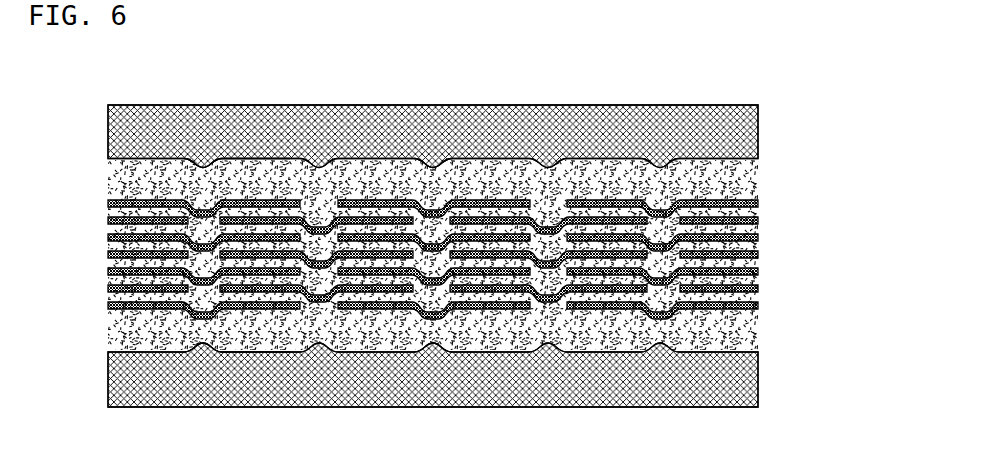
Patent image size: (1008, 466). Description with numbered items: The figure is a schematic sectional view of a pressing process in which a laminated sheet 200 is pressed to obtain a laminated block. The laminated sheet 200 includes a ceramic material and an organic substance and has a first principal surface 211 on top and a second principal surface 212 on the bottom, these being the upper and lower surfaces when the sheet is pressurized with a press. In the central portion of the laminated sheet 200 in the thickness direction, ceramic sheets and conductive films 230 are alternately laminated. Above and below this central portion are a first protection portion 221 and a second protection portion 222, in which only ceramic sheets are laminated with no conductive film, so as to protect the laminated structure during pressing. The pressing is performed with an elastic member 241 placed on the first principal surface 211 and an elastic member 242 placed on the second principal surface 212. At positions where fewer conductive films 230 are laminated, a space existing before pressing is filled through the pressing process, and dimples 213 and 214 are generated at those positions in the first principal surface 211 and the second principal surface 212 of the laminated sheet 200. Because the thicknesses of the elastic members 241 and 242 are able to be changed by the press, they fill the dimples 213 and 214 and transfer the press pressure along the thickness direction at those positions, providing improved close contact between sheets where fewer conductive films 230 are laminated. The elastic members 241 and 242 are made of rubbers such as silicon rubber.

The laminated sheet 200 is at (486, 256).
The first principal surface 211 is at (262, 162).
The second principal surface 212 is at (247, 352).
The dimple 213 is at (433, 162).
The dimple 214 is at (437, 347).
The first protection portion 221 is at (593, 177).
The second protection portion 222 is at (608, 337).
The conductive film 230 is at (474, 256).
The elastic member 241 is at (474, 108).
The elastic member 242 is at (474, 403).